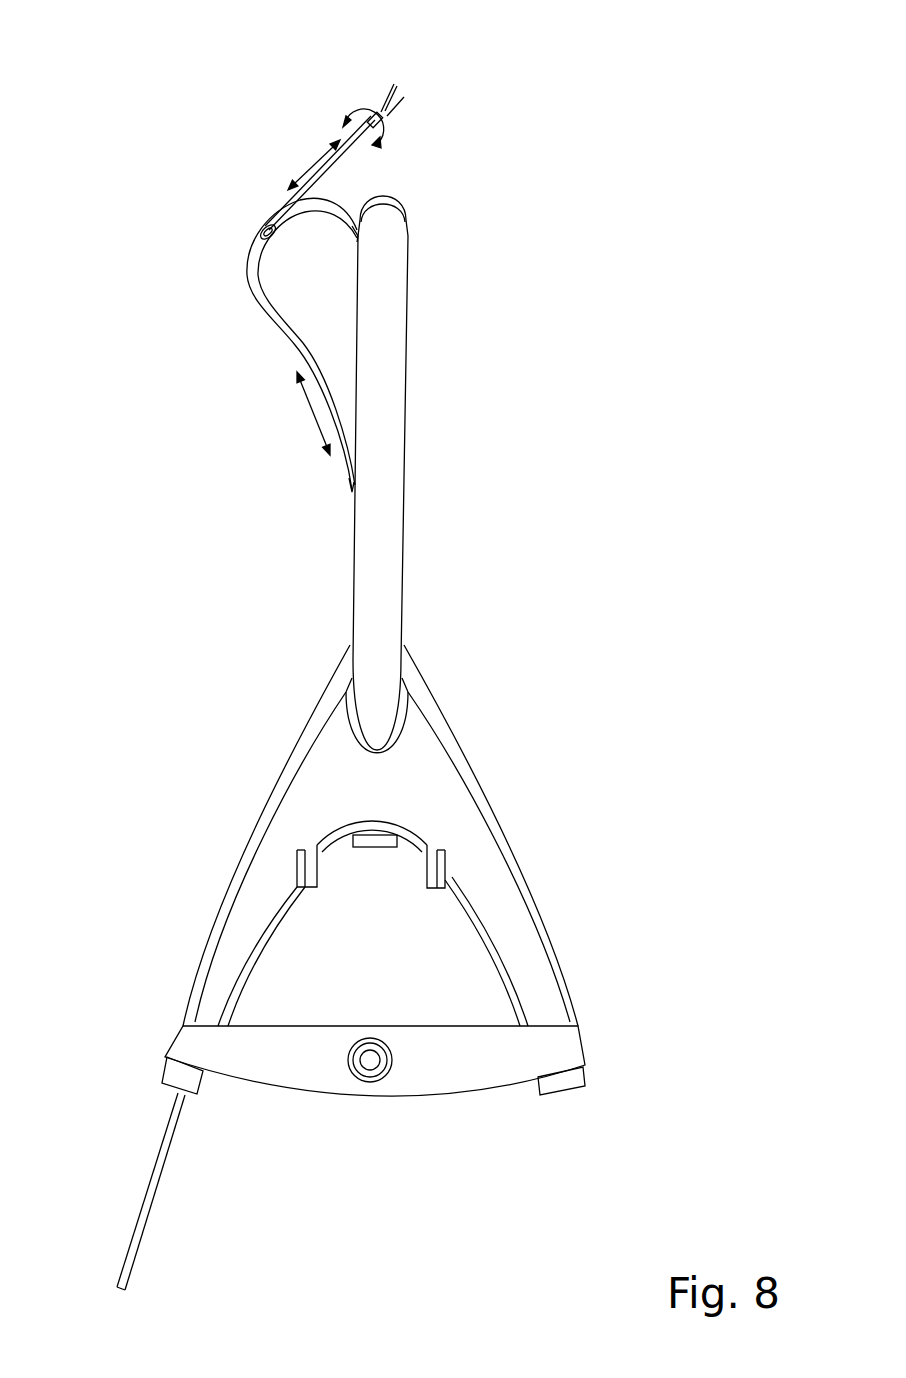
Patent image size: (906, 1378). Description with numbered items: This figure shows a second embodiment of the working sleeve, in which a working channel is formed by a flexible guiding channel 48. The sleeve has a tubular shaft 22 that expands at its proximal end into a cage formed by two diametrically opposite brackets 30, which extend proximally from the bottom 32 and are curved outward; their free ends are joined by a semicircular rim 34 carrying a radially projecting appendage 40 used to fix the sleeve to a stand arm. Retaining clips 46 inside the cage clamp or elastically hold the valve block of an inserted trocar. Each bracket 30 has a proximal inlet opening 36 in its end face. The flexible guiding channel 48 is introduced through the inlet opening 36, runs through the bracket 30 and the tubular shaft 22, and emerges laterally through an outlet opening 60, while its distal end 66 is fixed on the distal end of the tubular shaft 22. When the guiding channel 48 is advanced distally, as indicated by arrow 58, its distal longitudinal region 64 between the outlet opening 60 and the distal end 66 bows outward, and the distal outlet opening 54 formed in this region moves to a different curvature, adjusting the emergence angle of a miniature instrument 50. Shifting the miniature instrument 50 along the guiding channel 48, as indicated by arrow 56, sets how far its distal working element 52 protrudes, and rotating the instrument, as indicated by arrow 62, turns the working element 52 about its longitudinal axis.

The tubular shaft 22 is at (395, 353).
The brackets 30 is at (247, 888).
The bottom 32 is at (337, 833).
The rim 34 is at (300, 1063).
The proximal inlet opening 36 is at (190, 1100).
The appendage 40 is at (372, 1063).
The retaining clips 46 is at (303, 870).
The flexible guiding channel 48 is at (155, 1165).
The miniature instrument 50 is at (335, 165).
The distal working element 52 is at (395, 90).
The distal outlet opening 54 is at (258, 232).
The arrow 56 is at (310, 167).
The arrow 58 is at (313, 413).
The outlet opening 60 is at (350, 495).
The arrow 62 is at (363, 108).
The distal longitudinal region 64 is at (272, 320).
The distal end 66 is at (353, 235).